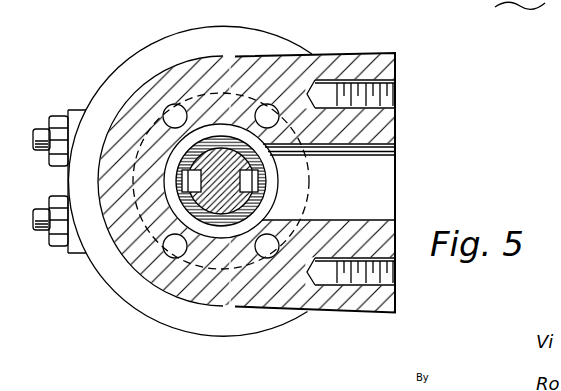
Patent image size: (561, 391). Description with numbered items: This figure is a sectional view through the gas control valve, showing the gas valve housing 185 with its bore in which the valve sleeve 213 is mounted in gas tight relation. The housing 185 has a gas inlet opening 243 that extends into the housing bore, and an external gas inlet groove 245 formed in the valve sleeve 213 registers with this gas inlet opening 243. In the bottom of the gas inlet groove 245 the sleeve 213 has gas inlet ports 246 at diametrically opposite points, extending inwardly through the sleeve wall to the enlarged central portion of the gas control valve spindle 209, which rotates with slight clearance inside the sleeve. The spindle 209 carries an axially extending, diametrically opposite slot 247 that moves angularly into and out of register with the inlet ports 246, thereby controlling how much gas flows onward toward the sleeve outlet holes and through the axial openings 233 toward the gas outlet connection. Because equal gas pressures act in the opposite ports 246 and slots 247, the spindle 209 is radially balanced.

The gas valve housing 185 is at (316, 72).
The gas control valve spindle 209 is at (259, 171).
The valve sleeve 213 is at (168, 208).
The axial openings 233 is at (173, 105).
The gas inlet opening 243 is at (378, 190).
The external gas inlet groove 245 is at (213, 125).
The gas inlet ports 246 is at (183, 182).
The axially extending diametrically opposite slot 247 is at (258, 189).